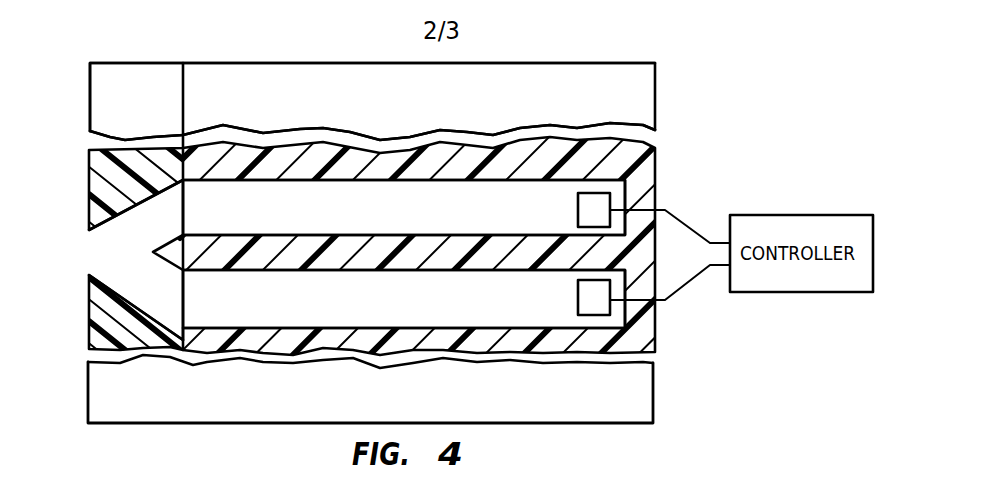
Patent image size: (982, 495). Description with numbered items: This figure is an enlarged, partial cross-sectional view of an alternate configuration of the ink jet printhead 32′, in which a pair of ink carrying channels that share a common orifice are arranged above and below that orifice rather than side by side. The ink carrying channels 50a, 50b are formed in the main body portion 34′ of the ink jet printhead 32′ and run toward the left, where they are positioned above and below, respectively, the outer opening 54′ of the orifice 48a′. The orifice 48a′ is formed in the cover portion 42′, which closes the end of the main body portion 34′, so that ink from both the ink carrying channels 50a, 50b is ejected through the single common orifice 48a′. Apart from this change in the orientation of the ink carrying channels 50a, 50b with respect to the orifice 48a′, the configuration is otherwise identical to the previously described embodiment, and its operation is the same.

The ink jet printhead 32′ is at (657, 63).
The main body portion 34′ is at (240, 63).
The cover portion 42′ is at (130, 63).
The outer opening 54′ is at (88, 233).
The orifice 48a′ is at (85, 253).
The ink carrying channel 50a is at (413, 223).
The ink carrying channel 50b is at (429, 308).